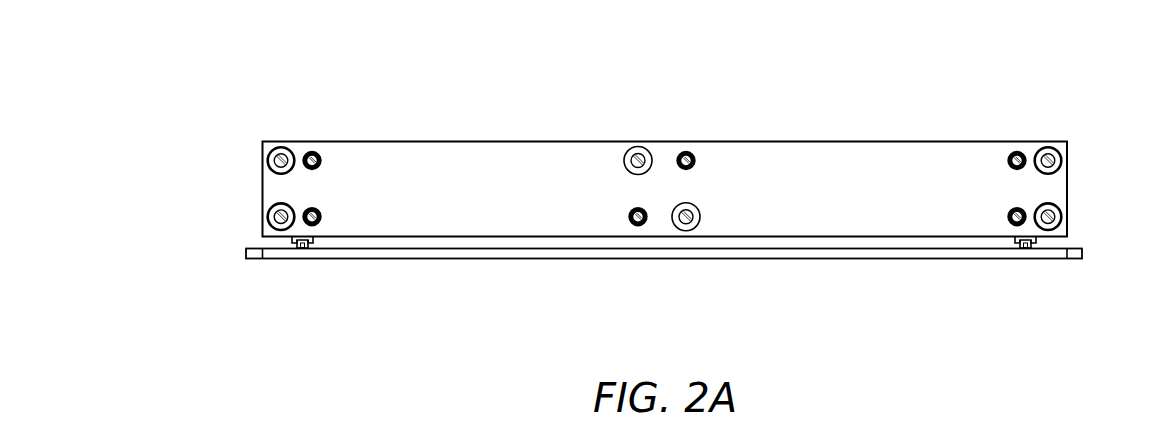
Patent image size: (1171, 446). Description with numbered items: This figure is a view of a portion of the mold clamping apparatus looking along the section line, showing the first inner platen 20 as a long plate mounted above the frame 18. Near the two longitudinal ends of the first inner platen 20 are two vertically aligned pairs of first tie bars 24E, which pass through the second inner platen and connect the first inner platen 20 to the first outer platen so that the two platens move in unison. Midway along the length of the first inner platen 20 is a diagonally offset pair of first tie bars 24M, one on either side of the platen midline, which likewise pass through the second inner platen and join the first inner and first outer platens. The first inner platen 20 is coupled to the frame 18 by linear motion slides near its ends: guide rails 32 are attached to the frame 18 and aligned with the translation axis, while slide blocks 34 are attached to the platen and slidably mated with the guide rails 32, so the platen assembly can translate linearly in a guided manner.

The frame 18 is at (287, 86).
The first inner platen 20 is at (790, 152).
The first tie bars 24E is at (267, 158).
The first tie bars 24M is at (638, 146).
The guide rails 32 is at (1025, 259).
The slide blocks 34 is at (1037, 240).